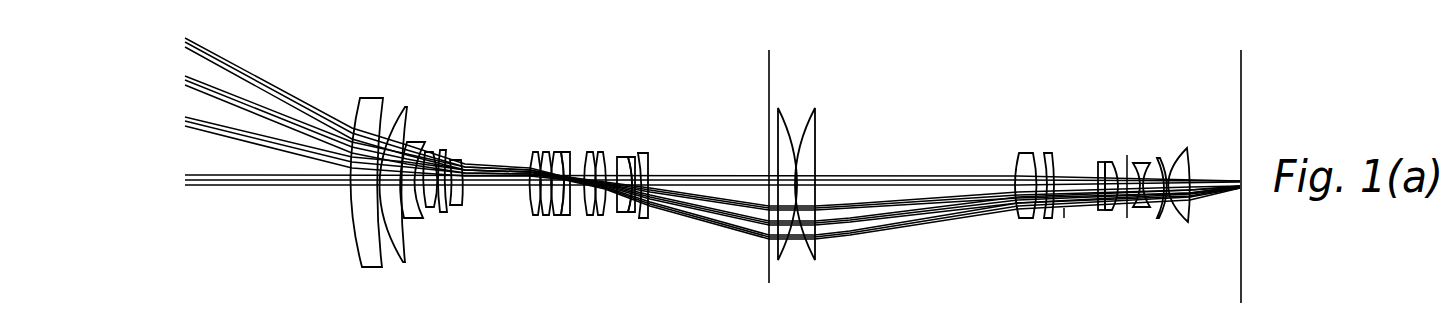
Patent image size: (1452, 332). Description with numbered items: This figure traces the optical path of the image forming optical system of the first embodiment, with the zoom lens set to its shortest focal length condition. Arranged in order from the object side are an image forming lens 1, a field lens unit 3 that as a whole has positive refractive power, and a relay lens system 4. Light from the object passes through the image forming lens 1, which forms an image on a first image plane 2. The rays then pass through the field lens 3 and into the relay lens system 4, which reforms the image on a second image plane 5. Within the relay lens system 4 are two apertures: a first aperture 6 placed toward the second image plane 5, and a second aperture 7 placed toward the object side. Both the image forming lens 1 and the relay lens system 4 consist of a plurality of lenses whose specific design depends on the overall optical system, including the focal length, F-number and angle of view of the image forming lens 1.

The image forming lens 1 is at (648, 295).
The first image plane 2 is at (769, 268).
The field lens unit 3 is at (777, 295).
The relay lens system 4 is at (1199, 297).
The second image plane 5 is at (1242, 283).
The first aperture 6 is at (1128, 155).
The second aperture 7 is at (1064, 161).